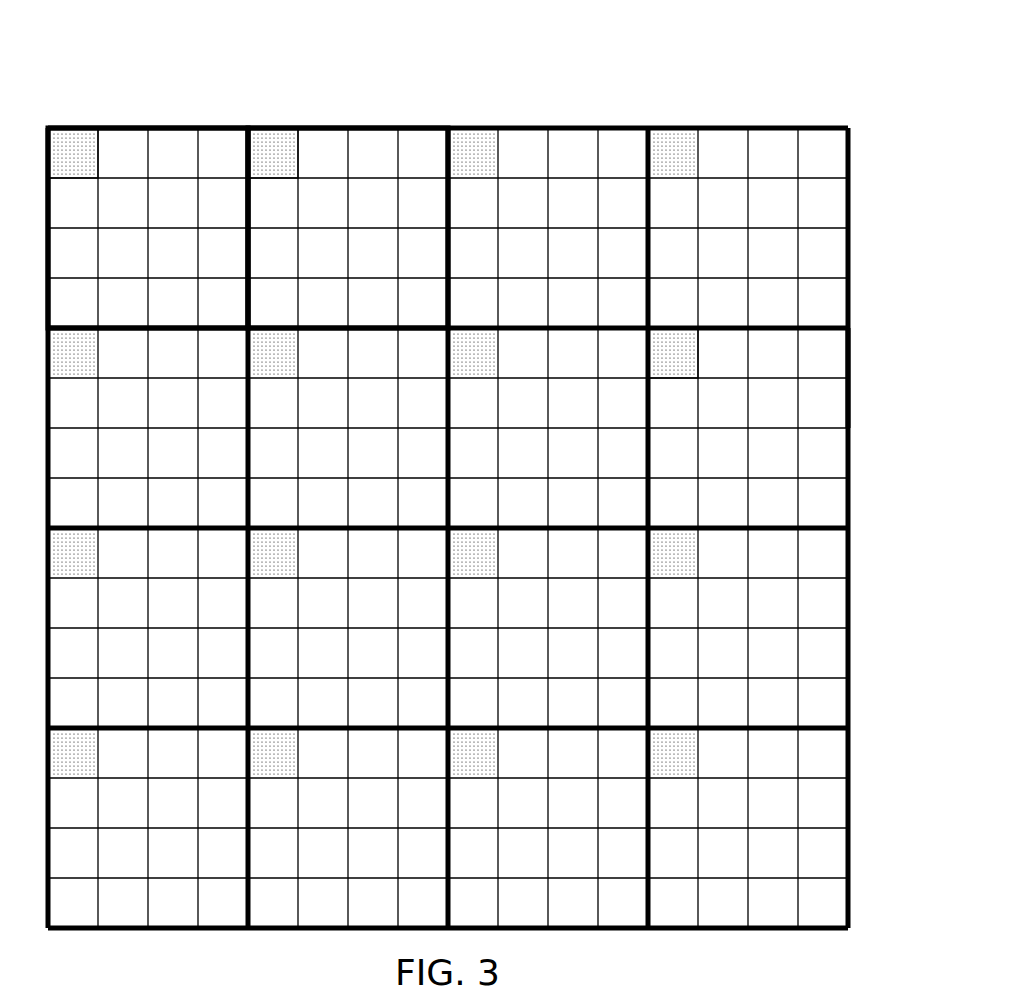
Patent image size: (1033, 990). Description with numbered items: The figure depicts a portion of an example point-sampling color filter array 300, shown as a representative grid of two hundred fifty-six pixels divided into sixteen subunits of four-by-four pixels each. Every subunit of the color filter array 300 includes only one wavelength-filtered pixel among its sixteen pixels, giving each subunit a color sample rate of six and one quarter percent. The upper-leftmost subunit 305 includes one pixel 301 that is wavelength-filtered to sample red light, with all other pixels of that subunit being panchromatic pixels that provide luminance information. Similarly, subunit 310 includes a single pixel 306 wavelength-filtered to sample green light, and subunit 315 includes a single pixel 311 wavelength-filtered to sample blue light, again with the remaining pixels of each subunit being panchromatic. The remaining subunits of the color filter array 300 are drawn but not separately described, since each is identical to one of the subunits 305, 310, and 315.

The point-sampling color filter array 300 is at (620, 82).
The red-filtered pixel 301 is at (72, 140).
The upper-leftmost subunit 305 is at (128, 126).
The green-filtered pixel 306 is at (272, 140).
The subunit 310 is at (330, 126).
The blue-filtered pixel 311 is at (689, 362).
The subunit 315 is at (852, 400).